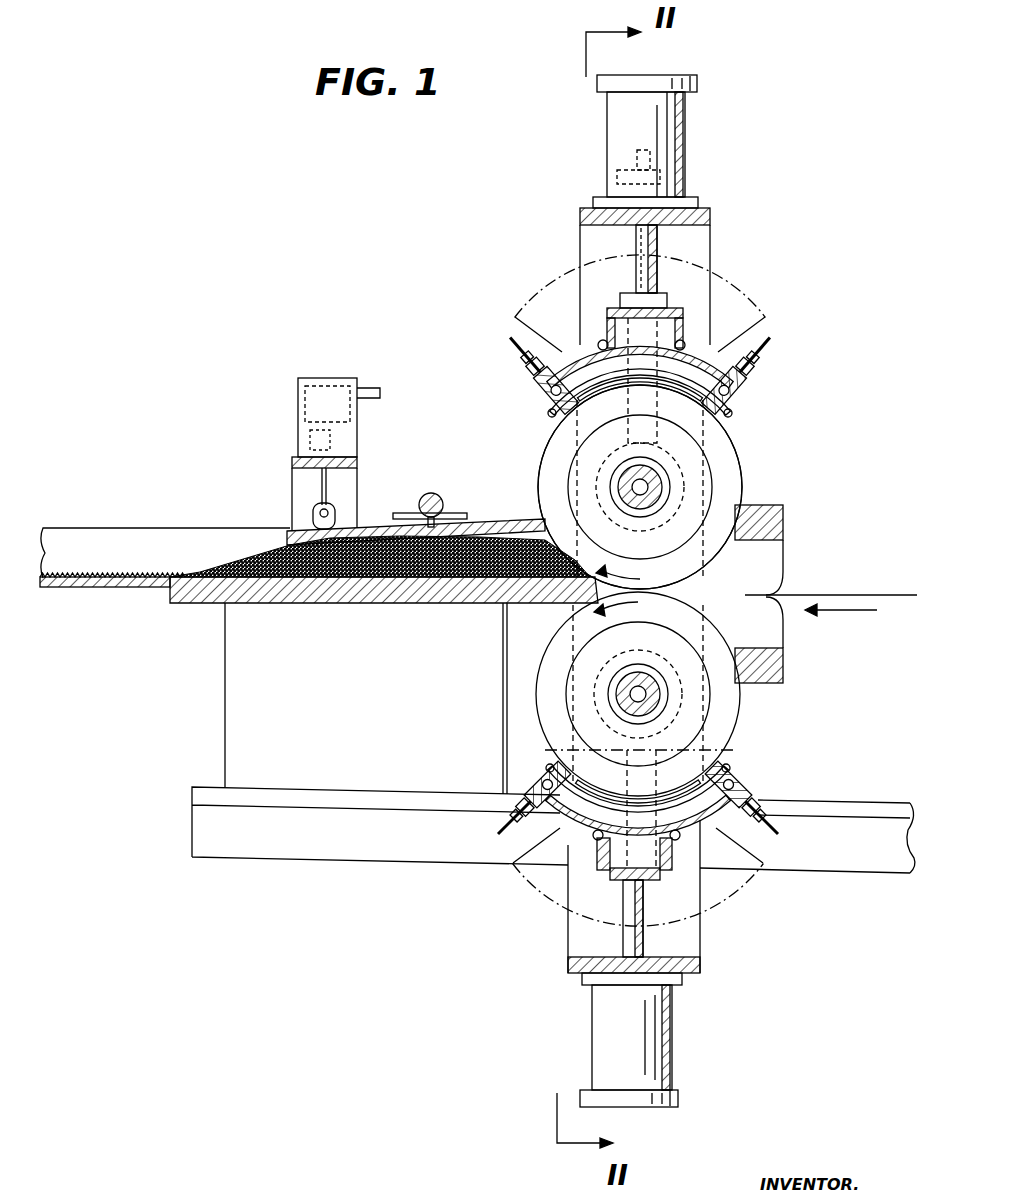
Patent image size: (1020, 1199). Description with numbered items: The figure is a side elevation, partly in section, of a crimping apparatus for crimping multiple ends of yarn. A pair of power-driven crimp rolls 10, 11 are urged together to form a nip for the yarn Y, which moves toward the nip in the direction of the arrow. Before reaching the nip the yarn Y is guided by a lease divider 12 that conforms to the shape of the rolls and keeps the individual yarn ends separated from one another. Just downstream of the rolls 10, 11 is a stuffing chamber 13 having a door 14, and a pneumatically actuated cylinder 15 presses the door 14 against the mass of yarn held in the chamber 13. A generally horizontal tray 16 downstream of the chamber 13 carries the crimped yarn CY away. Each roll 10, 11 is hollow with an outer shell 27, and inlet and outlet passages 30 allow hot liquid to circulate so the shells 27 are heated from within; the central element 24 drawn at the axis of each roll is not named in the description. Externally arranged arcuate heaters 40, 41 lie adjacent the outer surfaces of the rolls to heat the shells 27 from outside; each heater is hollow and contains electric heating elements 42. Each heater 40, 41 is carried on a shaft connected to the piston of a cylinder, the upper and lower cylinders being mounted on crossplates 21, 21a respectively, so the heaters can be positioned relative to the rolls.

The crimp roll 10 is at (728, 477).
The crimp roll 11 is at (722, 715).
The lease divider 12 is at (765, 562).
The stuffing chamber 13 is at (497, 518).
The door 14 is at (383, 528).
The pneumatically actuated cylinder 15 is at (300, 403).
The tray 16 is at (95, 590).
The crossplate 21 is at (705, 218).
The crossplate 21a is at (690, 964).
The roller shaft 24 is at (650, 497).
The outer shell 27 is at (720, 448).
The inlet and outlet passages 30 is at (630, 497).
The heater 40 is at (745, 353).
The heater 41 is at (735, 822).
The electric heating elements 42 is at (770, 392).
The crimped yarn CY is at (88, 567).
The yarn Y is at (903, 595).